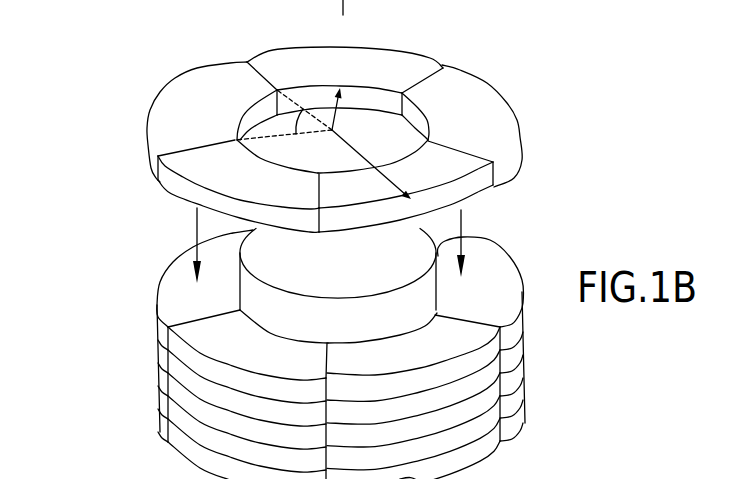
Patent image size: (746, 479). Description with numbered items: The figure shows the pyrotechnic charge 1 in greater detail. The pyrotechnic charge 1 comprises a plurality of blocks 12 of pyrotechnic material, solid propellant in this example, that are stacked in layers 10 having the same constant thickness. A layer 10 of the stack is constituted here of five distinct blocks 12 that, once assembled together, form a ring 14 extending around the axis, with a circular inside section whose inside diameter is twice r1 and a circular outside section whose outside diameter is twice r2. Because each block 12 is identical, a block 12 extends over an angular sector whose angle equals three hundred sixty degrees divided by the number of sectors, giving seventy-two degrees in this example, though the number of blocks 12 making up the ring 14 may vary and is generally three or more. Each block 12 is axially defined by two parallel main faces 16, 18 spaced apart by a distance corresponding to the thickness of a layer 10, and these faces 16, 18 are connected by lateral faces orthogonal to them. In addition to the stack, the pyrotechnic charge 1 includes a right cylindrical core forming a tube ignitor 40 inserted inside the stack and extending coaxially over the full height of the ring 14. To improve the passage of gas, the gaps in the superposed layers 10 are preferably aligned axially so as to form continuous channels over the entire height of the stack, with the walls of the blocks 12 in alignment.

The pyrotechnic charge 1 is at (308, 250).
The layer 10 is at (338, 271).
The block 12 is at (397, 62).
The ring 14 is at (488, 107).
The main face 16 is at (486, 130).
The main face 18 is at (482, 203).
The tube ignitor 40 is at (354, 275).
The inside radius r1 is at (336, 117).
The outside radius r2 is at (357, 153).